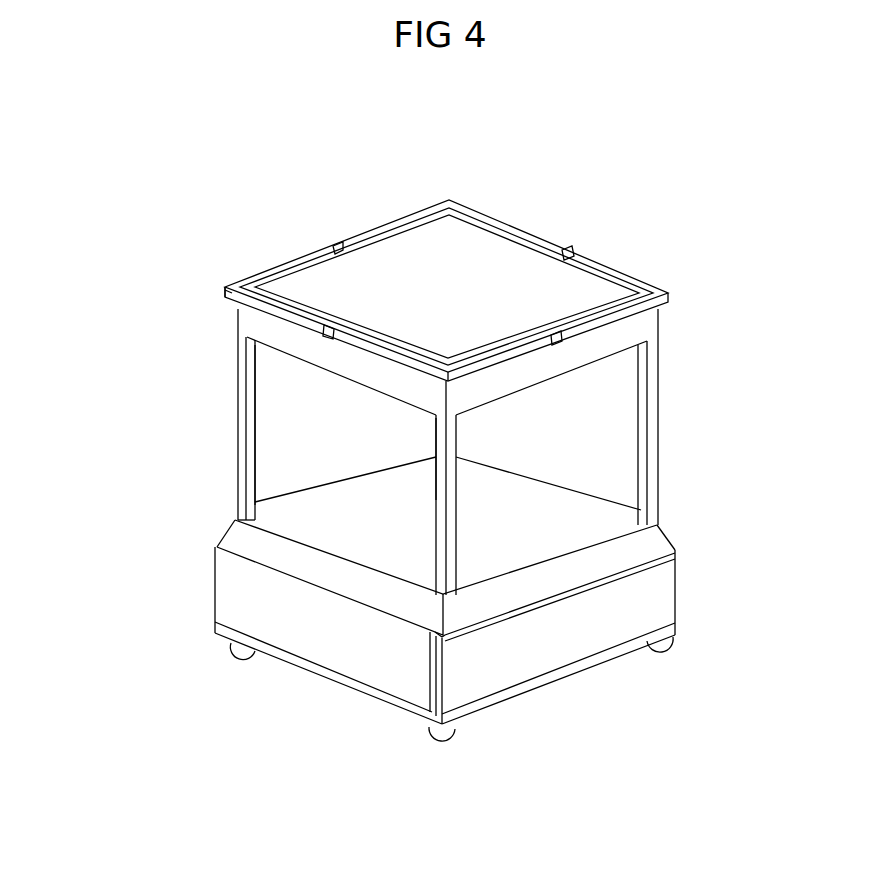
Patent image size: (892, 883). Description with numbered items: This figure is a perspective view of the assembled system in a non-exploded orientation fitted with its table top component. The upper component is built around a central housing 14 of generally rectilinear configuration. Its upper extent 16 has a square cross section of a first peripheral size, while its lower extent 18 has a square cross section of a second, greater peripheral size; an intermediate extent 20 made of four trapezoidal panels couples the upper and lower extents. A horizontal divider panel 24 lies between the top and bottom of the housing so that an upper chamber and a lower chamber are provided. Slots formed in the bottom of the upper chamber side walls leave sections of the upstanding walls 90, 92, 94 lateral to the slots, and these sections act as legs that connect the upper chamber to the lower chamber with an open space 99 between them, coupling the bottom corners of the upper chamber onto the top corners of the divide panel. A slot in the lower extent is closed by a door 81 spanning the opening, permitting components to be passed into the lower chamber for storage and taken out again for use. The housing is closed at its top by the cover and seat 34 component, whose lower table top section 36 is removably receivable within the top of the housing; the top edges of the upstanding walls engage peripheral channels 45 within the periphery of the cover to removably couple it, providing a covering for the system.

The central housing 14 is at (317, 230).
The peripheral channels 45 is at (472, 215).
The lower section 36 is at (508, 258).
The seat component 34 is at (218, 290).
The upper extent 16 is at (661, 328).
The upstanding wall 94 is at (232, 379).
The open space 99 is at (365, 424).
The upstanding wall 90 is at (661, 427).
The horizontal divider panel 24 is at (345, 515).
The intermediate extent 20 is at (238, 535).
The lower extent 18 is at (282, 605).
The door 81 is at (668, 583).
The upstanding wall 92 is at (433, 523).